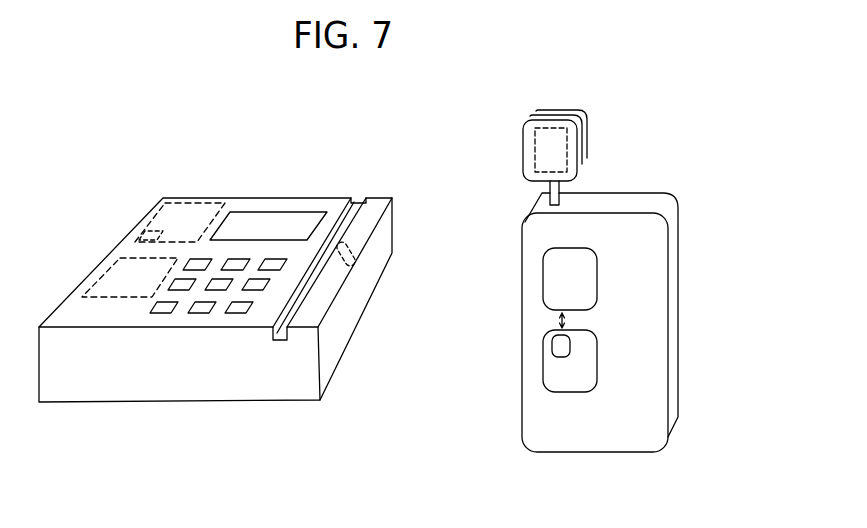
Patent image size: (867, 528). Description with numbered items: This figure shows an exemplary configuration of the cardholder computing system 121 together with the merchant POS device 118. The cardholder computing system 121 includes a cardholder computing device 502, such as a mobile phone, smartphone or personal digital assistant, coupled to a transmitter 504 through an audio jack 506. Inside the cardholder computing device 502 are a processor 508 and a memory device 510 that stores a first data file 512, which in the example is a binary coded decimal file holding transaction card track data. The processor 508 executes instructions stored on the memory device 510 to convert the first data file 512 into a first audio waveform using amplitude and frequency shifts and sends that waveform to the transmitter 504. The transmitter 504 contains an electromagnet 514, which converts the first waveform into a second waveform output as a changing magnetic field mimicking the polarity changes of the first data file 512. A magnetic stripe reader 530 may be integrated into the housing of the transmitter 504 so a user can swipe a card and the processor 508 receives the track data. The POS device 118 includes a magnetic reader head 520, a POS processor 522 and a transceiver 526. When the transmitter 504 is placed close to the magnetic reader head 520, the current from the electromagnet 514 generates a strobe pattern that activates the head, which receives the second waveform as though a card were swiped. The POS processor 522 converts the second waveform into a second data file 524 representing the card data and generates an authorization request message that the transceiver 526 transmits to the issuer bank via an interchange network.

The merchant POS device 118 is at (244, 201).
The cardholder computing system 121 is at (625, 114).
The cardholder computing device 502 is at (617, 223).
The transmitter 504 is at (528, 153).
The audio jack 506 is at (550, 201).
The processor 508 is at (557, 287).
The memory device 510 is at (557, 377).
The first data file 512 is at (558, 347).
The electromagnet 514 is at (548, 145).
The magnetic reader head 520 is at (352, 255).
The POS processor 522 is at (170, 215).
The second data file 524 is at (142, 237).
The transceiver 526 is at (122, 276).
The magnetic stripe reader 530 is at (539, 114).